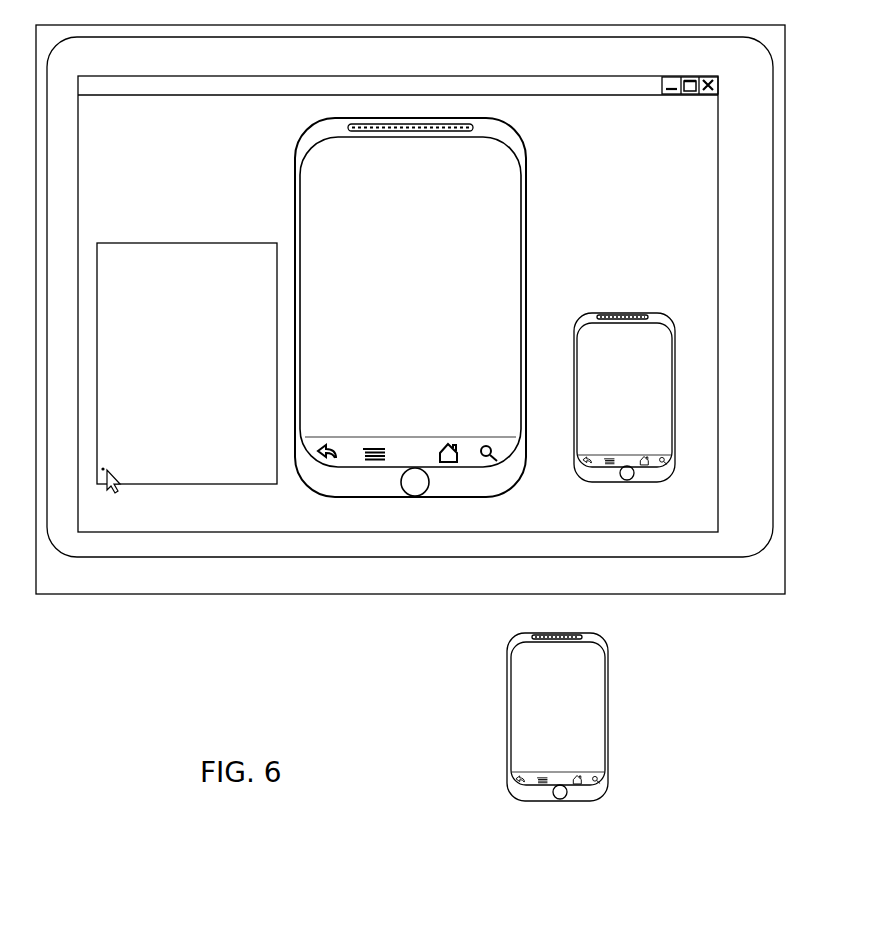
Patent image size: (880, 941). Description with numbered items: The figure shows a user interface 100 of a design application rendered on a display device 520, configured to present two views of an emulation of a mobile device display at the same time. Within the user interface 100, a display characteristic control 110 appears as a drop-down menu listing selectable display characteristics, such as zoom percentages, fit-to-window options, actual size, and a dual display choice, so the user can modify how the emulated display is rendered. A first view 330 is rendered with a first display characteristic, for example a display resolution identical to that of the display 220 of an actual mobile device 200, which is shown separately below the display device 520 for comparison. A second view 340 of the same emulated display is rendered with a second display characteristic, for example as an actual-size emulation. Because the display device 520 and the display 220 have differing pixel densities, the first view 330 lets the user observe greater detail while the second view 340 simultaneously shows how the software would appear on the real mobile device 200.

The user interface 100 is at (652, 533).
The display characteristic control 110 is at (168, 484).
The mobile device 200 is at (492, 717).
The display 220 is at (532, 726).
The first view 330 is at (333, 497).
The second view 340 is at (612, 313).
The display device 520 is at (605, 594).